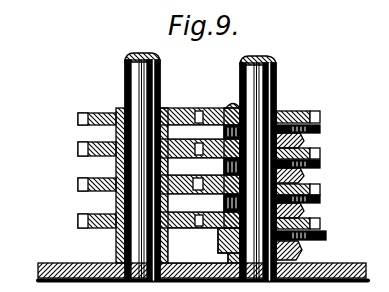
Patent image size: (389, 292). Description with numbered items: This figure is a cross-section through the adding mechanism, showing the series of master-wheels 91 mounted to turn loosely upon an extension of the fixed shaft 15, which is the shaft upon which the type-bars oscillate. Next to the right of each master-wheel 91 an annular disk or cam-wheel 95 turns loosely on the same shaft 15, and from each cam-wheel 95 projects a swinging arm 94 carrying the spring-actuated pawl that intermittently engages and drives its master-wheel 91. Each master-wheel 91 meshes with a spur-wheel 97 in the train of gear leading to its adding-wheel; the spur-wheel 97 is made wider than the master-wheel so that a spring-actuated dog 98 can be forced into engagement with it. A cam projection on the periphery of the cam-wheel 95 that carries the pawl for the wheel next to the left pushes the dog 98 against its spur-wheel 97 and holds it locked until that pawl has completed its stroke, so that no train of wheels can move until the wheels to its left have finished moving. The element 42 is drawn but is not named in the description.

The shaft 42 is at (122, 68).
The fixed shaft 15 is at (268, 80).
The spur-wheel 97 is at (176, 106).
The spring-actuated dog 98 is at (204, 168).
The master-wheel 91 is at (312, 108).
The swinging arm 94 is at (312, 121).
The annular disk or cam-wheel 95 is at (292, 131).